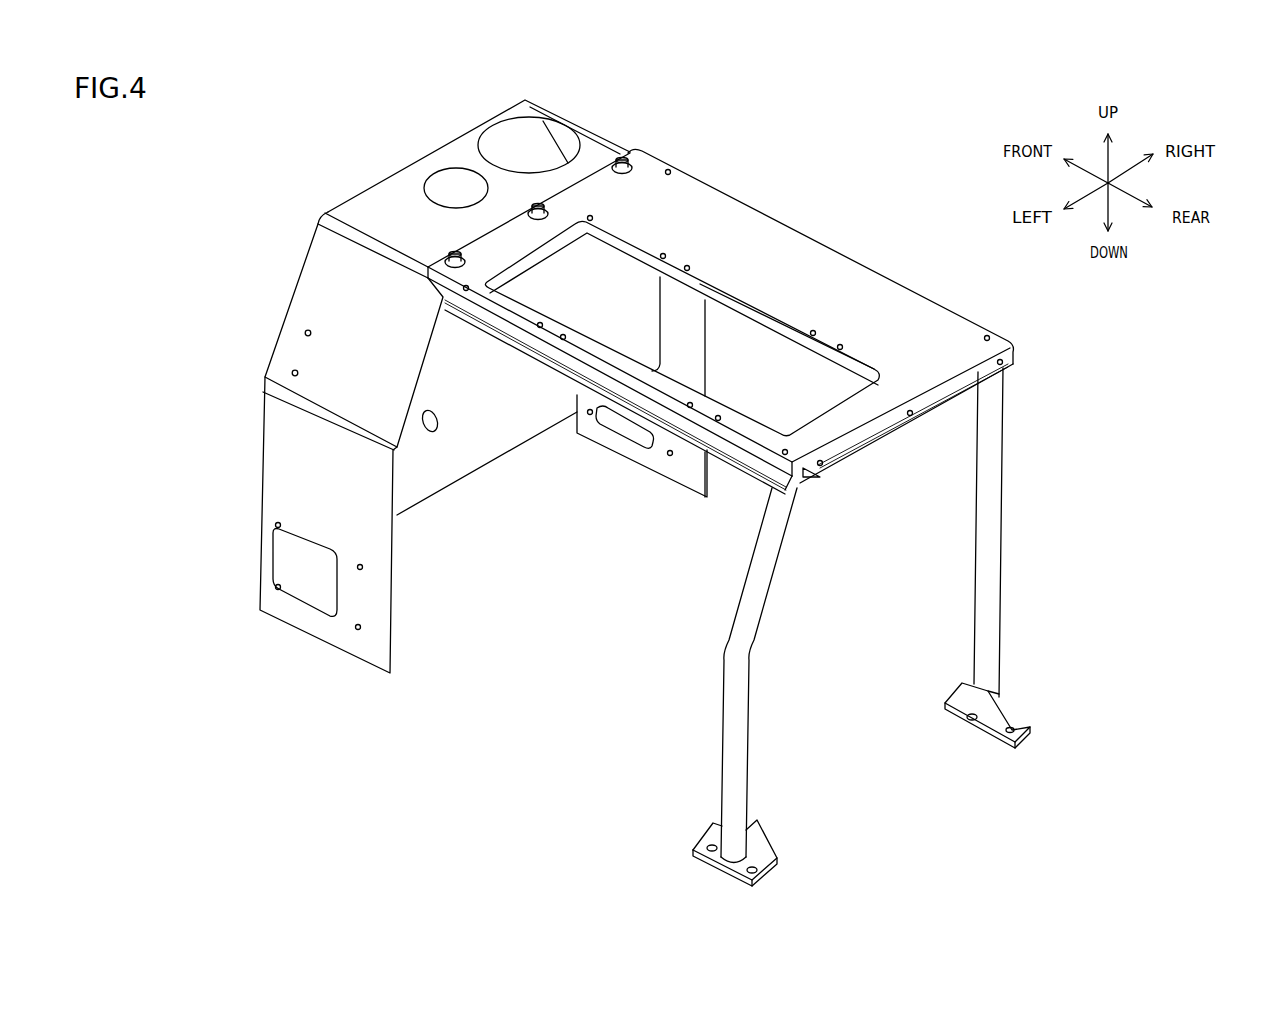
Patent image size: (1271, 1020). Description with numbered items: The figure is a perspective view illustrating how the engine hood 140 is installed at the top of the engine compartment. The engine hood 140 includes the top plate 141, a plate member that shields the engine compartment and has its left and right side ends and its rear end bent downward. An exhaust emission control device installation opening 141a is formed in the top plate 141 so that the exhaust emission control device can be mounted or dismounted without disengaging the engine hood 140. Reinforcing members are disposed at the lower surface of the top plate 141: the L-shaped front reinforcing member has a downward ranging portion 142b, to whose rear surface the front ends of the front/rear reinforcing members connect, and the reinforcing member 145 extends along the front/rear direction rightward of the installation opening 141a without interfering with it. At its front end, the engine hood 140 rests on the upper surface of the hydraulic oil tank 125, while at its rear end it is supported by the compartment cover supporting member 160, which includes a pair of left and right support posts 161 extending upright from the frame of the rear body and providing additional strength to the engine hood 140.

The hydraulic oil tank 125 is at (322, 290).
The engine hood 140 is at (841, 246).
The top plate 141 is at (915, 315).
The exhaust emission control device installation opening 141a is at (760, 403).
The downward ranging portion 142b is at (562, 247).
The reinforcing member 145 is at (817, 350).
The compartment cover supporting member 160 is at (874, 627).
The support post 161 is at (980, 641).